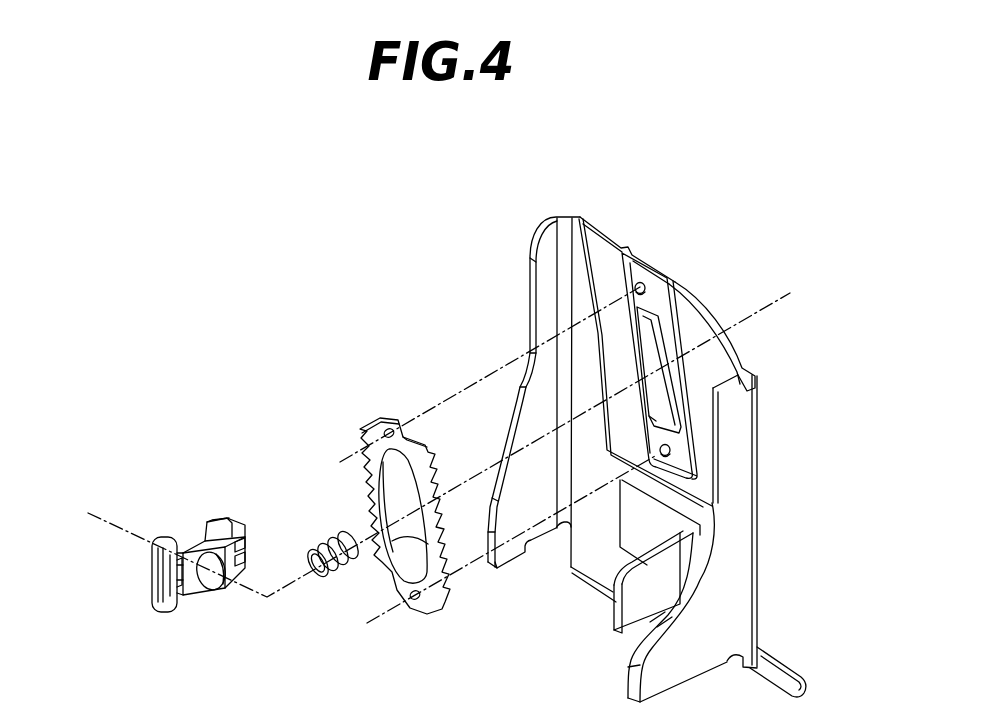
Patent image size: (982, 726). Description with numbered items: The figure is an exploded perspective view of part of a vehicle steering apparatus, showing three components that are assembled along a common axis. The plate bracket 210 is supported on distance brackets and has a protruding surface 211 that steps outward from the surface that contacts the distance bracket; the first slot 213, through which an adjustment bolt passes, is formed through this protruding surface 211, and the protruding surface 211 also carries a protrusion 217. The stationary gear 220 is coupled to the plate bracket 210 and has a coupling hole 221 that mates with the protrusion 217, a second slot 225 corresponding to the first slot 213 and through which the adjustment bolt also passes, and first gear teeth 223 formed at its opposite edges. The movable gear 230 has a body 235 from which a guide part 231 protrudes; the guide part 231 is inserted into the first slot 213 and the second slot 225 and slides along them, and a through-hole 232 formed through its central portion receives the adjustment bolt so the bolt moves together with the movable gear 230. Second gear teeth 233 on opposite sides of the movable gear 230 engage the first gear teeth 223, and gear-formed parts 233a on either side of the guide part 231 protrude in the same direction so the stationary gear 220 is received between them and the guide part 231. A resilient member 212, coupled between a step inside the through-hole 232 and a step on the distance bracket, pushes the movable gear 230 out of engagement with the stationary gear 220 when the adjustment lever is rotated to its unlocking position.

The plate bracket 210 is at (526, 210).
The protruding surface 211 is at (656, 293).
The resilient member 212 is at (329, 542).
The first slot 213 is at (640, 337).
The protrusion 217 is at (641, 283).
The stationary gear 220 is at (371, 400).
The coupling hole 221 is at (394, 428).
The first gear teeth 223 is at (378, 566).
The second slot 225 is at (428, 546).
The movable gear 230 is at (174, 506).
The guide part 231 is at (193, 590).
The through-hole 232 is at (215, 585).
The second gear teeth 233 is at (168, 582).
The gear-formed part 233a is at (178, 567).
The body 235 is at (157, 571).